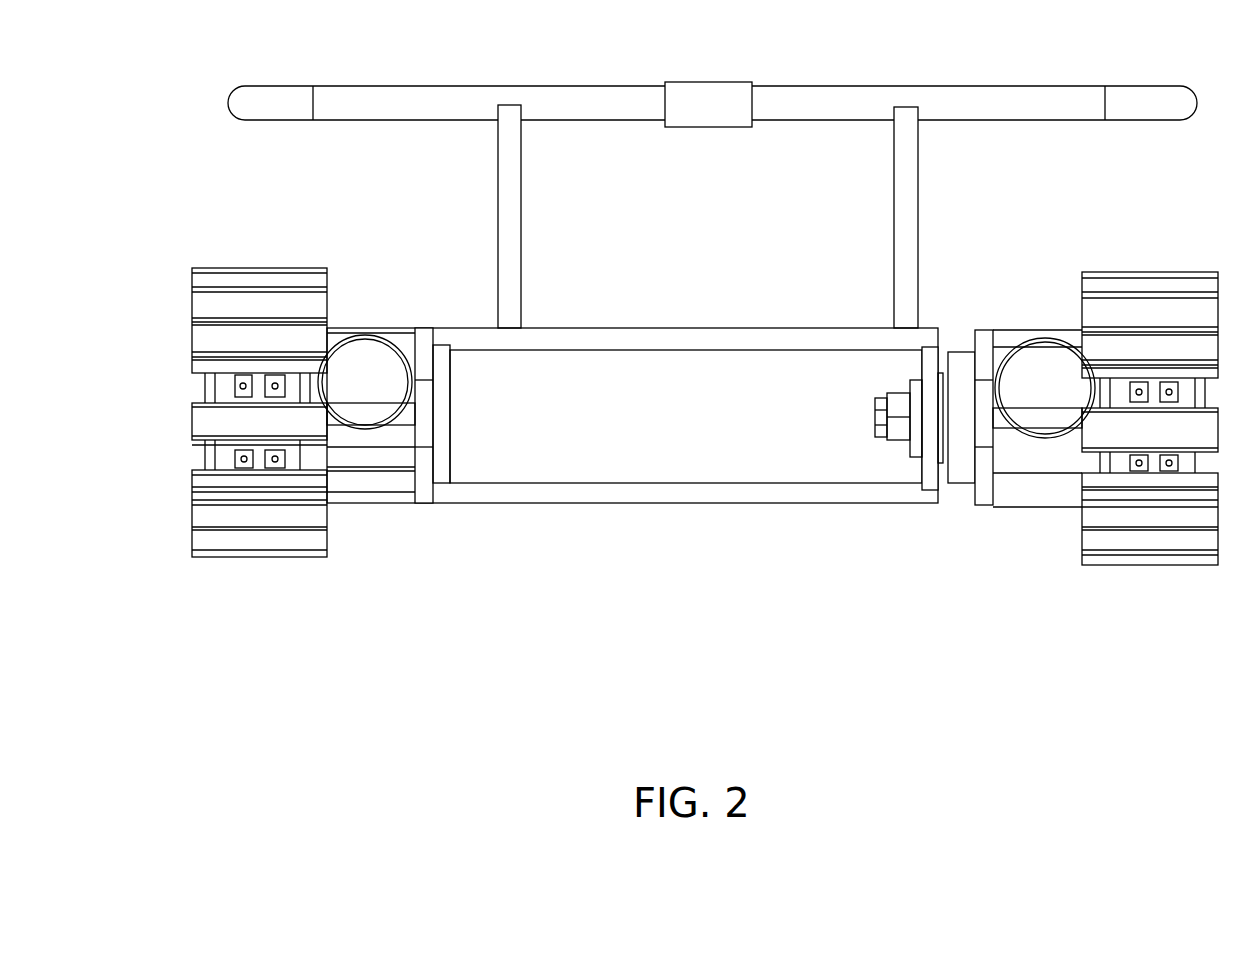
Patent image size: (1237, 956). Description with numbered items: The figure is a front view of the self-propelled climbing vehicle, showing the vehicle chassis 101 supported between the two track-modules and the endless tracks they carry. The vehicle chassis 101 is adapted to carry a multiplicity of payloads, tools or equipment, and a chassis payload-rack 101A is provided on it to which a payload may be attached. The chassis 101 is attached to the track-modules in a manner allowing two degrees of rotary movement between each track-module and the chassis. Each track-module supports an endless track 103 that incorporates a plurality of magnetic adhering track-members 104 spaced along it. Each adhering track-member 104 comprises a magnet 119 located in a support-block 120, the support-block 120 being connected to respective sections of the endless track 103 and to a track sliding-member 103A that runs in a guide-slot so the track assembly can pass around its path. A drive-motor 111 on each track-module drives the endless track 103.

The vehicle chassis 101 is at (732, 338).
The chassis payload-rack 101A is at (645, 108).
The endless track 103 is at (1082, 527).
The track sliding-members 103A is at (262, 380).
The adhering track-members 104 is at (1180, 228).
The drive-motor 111 is at (372, 357).
The magnet 119 is at (305, 272).
The support-block 120 is at (305, 447).